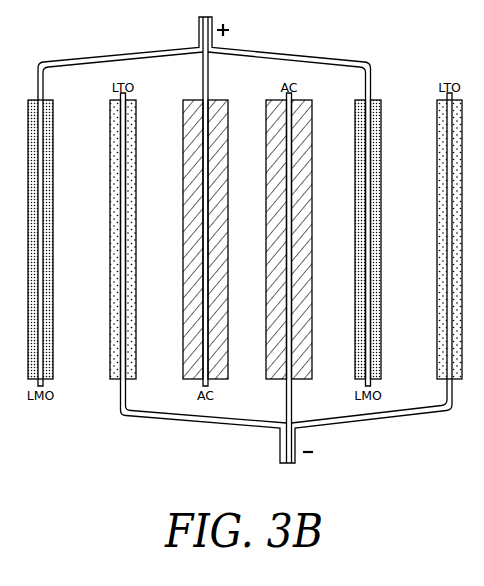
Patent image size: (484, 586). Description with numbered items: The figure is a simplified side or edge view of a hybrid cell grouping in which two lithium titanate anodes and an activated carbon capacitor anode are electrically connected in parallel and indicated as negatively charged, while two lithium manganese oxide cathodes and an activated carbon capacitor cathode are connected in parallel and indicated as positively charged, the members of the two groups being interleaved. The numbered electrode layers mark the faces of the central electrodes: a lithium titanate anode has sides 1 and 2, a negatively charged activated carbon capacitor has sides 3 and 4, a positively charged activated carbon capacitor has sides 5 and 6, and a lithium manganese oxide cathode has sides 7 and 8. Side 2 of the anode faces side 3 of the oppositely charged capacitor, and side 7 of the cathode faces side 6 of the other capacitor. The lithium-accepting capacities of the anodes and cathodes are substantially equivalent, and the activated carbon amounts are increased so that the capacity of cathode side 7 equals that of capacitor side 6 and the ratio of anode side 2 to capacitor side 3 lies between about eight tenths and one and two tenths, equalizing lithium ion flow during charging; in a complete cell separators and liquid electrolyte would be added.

The side of LTO anode 1 is at (109, 239).
The side of LTO anode 2 is at (136, 239).
The side of AC capacitor 3 is at (187, 239).
The side of AC capacitor 4 is at (223, 239).
The side of AC capacitor 5 is at (270, 239).
The side of AC capacitor 6 is at (307, 239).
The side of LMO cathode 7 is at (354, 239).
The side of LMO cathode 8 is at (381, 239).